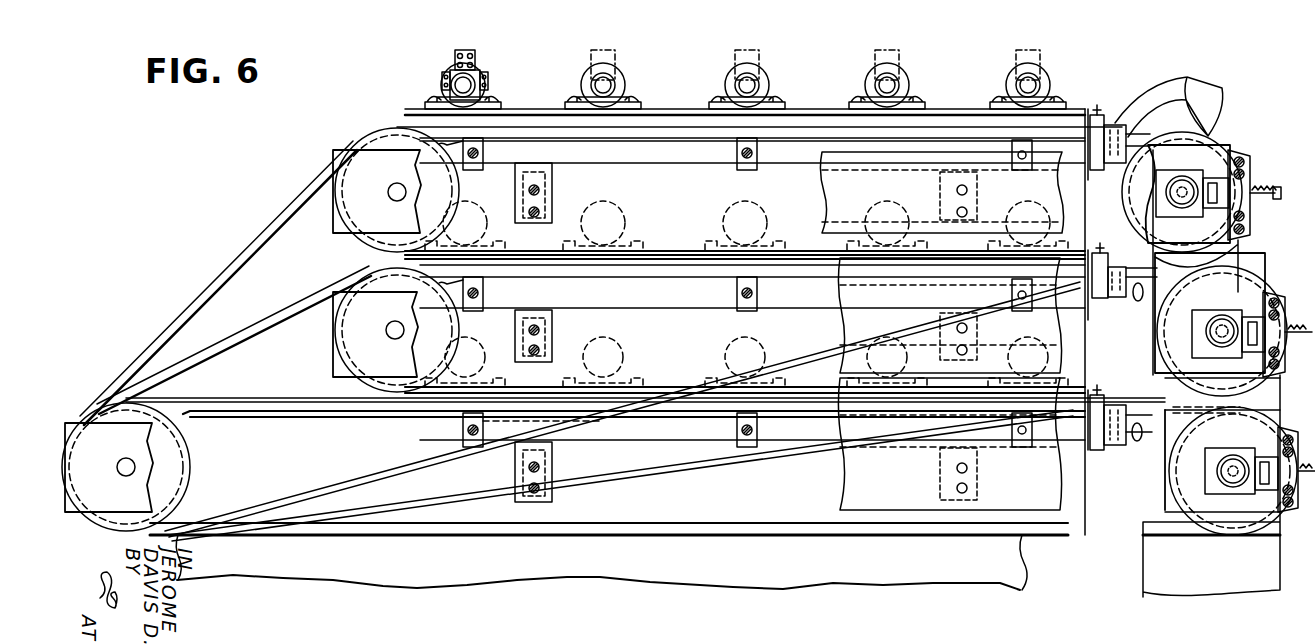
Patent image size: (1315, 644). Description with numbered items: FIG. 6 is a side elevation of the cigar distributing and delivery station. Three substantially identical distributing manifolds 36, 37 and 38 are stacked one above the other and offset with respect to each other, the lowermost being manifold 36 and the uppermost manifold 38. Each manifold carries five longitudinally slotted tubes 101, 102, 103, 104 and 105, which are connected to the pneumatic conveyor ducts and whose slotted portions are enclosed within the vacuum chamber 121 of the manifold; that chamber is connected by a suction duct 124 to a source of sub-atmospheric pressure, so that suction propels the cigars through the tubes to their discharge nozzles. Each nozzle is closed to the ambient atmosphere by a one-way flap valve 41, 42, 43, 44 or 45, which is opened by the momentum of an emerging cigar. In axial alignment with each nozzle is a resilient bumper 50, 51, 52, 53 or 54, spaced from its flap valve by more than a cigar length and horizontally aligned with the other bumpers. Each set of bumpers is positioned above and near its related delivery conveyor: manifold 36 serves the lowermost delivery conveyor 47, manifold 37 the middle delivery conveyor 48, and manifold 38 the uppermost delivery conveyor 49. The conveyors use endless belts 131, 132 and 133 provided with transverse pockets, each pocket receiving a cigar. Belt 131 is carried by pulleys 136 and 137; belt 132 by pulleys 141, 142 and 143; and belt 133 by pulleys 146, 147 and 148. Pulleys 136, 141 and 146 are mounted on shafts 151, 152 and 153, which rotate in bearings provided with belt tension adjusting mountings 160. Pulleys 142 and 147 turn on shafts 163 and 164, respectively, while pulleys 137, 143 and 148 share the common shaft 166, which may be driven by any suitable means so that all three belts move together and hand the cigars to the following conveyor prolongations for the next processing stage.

The distributing manifold 36 is at (604, 450).
The distributing manifold 37 is at (692, 319).
The distributing manifold 38 is at (650, 171).
The one-way flap valve 41 is at (475, 60).
The one-way flap valve 42 is at (612, 58).
The one-way flap valve 43 is at (756, 58).
The one-way flap valve 44 is at (897, 58).
The one-way flap valve 45 is at (1037, 58).
The delivery conveyor 47 is at (308, 398).
The delivery conveyor 48 is at (362, 263).
The delivery conveyor 49 is at (386, 118).
The resilient bumper 50 is at (480, 106).
The resilient bumper 51 is at (626, 100).
The resilient bumper 52 is at (770, 100).
The resilient bumper 53 is at (910, 100).
The resilient bumper 54 is at (1050, 100).
The longitudinally slotted tube 101 is at (452, 77).
The slotted tube 102 is at (596, 78).
The slotted tube 103 is at (740, 78).
The slotted tube 104 is at (880, 78).
The slotted tube 105 is at (1018, 78).
The vacuum chamber 121 is at (678, 158).
The suction duct 124 is at (1172, 97).
The endless belt 131 is at (243, 399).
The endless belt 132 is at (266, 321).
The endless belt 133 is at (226, 272).
The pulley 136 is at (1197, 492).
The pulley 137 is at (189, 467).
The pulley 141 is at (1200, 317).
The pulley 142 is at (367, 330).
The pulley 143 is at (126, 467).
The pulley 146 is at (1174, 237).
The pulley 147 is at (382, 180).
The pulley 148 is at (109, 467).
The shaft 151 is at (1216, 473).
The shaft 152 is at (1205, 329).
The shaft 153 is at (1166, 192).
The belt tension adjusting mounting 160 is at (1262, 190).
The shaft 163 is at (387, 330).
The shaft 164 is at (389, 192).
The shaft 166 is at (121, 461).